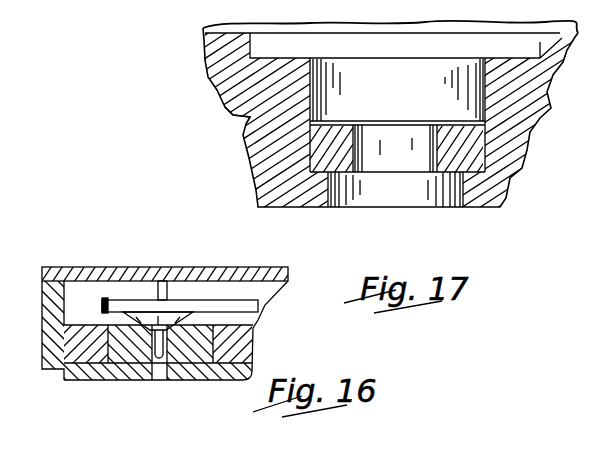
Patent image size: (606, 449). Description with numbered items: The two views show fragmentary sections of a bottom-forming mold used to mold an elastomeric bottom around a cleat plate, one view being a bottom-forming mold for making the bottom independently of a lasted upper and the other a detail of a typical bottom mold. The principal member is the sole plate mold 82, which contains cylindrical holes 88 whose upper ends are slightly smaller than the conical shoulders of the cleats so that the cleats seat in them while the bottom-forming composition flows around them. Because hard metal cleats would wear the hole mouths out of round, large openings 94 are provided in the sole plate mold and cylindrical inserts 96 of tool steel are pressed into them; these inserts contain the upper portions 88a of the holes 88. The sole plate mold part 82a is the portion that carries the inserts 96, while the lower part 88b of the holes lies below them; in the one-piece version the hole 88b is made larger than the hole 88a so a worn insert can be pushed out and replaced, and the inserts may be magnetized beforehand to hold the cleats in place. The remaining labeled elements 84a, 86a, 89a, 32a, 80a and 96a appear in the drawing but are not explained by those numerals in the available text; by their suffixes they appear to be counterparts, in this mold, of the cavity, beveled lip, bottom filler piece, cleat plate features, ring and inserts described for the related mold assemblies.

In FIG. 17, the sole plate mold 82 is at (246, 149).
In FIG. 17, the sole plate mold part 82a is at (250, 115).
In FIG. 16, the sole plate mold part 82a is at (88, 382).
In FIG. 17, the large openings 94 is at (333, 85).
In FIG. 17, the cylindrical inserts 96 is at (329, 124).
In FIG. 17, the cylindrical holes 88 is at (370, 188).
In FIG. 17, the upper portions of the holes 88a is at (414, 142).
In FIG. 17, the lower part of the holes 88b is at (336, 206).
In FIG. 16, the top plate 84a is at (70, 288).
In FIG. 16, the recess 86a is at (96, 277).
In FIG. 16, the pin 89a is at (172, 292).
In FIG. 16, the plate 32a is at (250, 321).
In FIG. 16, the side wall 80a is at (45, 374).
In FIG. 16, the channel 96a is at (196, 382).